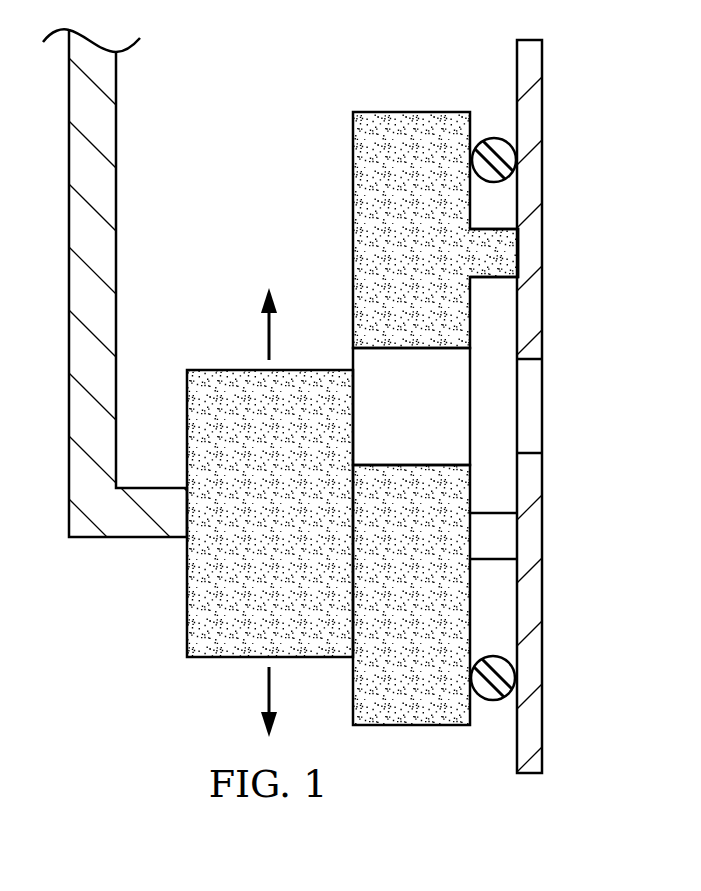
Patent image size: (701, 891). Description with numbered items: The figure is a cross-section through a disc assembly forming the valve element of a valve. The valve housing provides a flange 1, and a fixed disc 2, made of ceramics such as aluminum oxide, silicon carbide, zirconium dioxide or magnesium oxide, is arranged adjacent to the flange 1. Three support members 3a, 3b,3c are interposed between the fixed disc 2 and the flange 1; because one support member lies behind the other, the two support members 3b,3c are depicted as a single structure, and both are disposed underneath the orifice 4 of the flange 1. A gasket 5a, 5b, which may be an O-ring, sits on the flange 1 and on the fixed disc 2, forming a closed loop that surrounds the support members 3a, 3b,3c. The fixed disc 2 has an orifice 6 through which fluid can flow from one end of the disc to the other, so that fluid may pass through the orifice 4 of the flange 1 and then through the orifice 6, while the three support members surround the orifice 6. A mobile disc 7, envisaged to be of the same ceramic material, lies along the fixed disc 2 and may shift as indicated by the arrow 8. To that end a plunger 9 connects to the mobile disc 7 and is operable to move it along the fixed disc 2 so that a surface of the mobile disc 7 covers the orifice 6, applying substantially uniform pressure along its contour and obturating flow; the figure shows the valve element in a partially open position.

The flange 1 is at (531, 173).
The fixed disc 2 is at (414, 106).
The support member 3a is at (510, 250).
The support members 3b,3c is at (557, 545).
The orifice of the flange 4 is at (526, 364).
The gasket 5a is at (497, 140).
The gasket 5b is at (493, 700).
The orifice of the fixed disc 6 is at (403, 420).
The mobile disc 7 is at (197, 596).
The arrow 8 is at (266, 690).
The plunger 9 is at (78, 280).